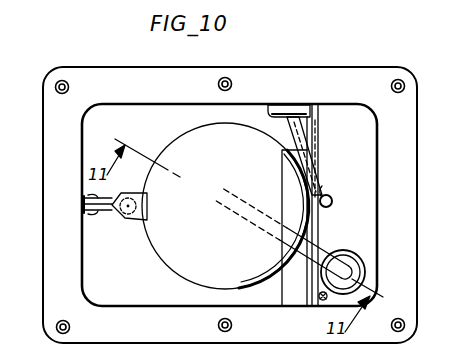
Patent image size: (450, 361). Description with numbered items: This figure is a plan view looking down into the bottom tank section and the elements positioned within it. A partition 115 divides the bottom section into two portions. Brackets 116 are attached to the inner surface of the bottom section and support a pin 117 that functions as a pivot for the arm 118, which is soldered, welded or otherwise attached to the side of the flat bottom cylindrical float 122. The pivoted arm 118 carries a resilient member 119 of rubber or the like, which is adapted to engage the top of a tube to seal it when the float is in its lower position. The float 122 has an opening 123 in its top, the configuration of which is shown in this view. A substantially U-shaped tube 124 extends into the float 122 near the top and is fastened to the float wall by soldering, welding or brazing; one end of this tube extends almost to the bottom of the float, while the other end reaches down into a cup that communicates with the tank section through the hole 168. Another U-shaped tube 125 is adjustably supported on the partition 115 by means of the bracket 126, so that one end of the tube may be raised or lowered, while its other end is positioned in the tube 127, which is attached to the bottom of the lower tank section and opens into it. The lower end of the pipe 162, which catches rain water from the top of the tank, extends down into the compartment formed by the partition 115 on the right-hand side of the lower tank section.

The partition 115 is at (319, 143).
The brackets 116 is at (83, 192).
The pin 117 is at (93, 215).
The arm 118 is at (135, 221).
The resilient member 119 is at (122, 198).
The float 122 is at (172, 258).
The opening 123 is at (288, 203).
The tube 124 is at (310, 258).
The U-shaped tube 125 is at (318, 190).
The bracket 126 is at (306, 120).
The tube 127 is at (332, 199).
The pipe 162 is at (321, 300).
The hole 168 is at (359, 236).